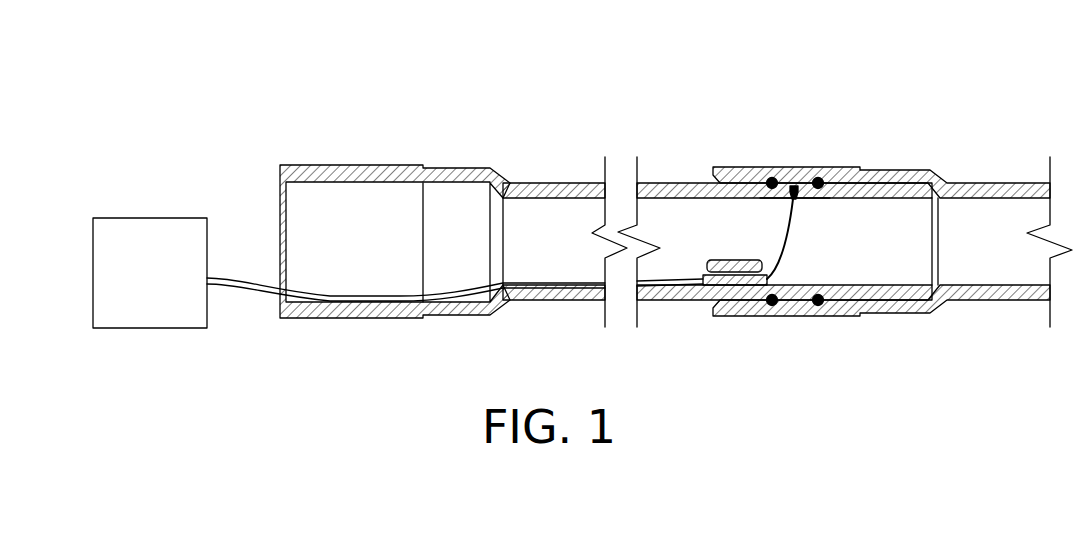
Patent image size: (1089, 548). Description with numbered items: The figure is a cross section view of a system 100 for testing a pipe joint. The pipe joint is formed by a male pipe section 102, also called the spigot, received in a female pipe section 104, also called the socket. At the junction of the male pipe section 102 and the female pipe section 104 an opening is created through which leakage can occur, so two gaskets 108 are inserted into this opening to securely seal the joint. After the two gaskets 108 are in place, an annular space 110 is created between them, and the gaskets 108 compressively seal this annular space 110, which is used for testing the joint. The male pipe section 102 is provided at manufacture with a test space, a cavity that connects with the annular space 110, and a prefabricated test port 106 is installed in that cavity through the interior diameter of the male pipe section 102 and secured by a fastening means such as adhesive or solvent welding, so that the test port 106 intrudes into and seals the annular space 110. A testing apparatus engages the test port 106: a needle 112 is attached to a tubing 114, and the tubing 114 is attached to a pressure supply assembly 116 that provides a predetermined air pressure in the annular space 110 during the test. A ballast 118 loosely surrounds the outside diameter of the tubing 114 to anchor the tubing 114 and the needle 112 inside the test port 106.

The system for testing pipe joint 100 is at (181, 90).
The male pipe section 102 is at (557, 183).
The female pipe section 104 is at (927, 170).
The test port 106 is at (787, 202).
The gaskets 108 is at (765, 172).
The annular space 110 is at (796, 184).
The needle 112 is at (805, 197).
The tubing 114 is at (253, 277).
The pressure supply assembly 116 is at (128, 242).
The ballast 118 is at (743, 307).